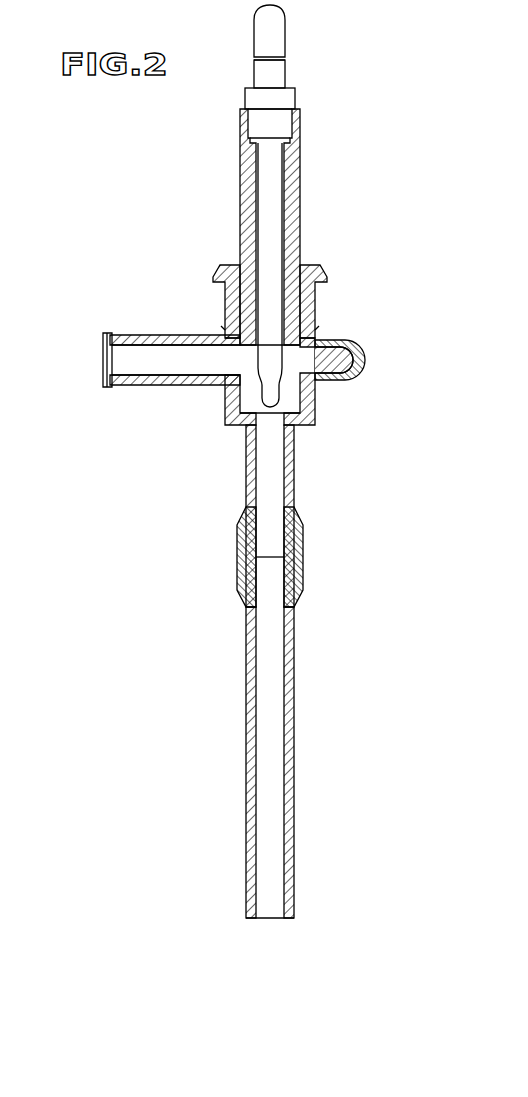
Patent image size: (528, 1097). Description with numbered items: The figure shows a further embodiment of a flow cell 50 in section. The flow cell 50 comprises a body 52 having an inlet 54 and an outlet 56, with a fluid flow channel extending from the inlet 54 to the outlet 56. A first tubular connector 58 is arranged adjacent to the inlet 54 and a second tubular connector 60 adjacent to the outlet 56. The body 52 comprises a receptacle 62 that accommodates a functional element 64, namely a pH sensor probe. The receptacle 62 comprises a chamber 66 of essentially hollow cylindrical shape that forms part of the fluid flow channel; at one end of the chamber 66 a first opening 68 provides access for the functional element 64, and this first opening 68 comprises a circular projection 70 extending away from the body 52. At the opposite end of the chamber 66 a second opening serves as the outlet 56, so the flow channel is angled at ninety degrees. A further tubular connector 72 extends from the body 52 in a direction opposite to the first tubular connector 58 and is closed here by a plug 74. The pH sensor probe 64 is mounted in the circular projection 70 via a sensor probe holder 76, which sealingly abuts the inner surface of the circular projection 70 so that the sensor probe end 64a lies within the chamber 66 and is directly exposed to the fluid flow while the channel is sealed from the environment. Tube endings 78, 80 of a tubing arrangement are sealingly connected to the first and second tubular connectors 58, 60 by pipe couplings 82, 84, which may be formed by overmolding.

The flow cell 50 is at (257, 461).
The body 52 is at (174, 397).
The inlet 54 is at (231, 397).
The outlet 56 is at (294, 404).
The first tubular connector 58 is at (167, 336).
The second tubular connector 60 is at (294, 475).
The receptacle 62 is at (322, 430).
The functional element 64 is at (285, 38).
The sensor probe end 64a is at (271, 409).
The chamber 66 is at (291, 382).
The first opening 68 is at (225, 342).
The circular projection 70 is at (316, 307).
The further tubular connector 72 is at (341, 342).
The plug 74 is at (348, 360).
The sensor probe holder 76 is at (240, 170).
The tube ending 78 is at (99, 377).
The tube ending 80 is at (295, 666).
The pipe coupling 82 is at (117, 333).
The pipe coupling 84 is at (301, 568).